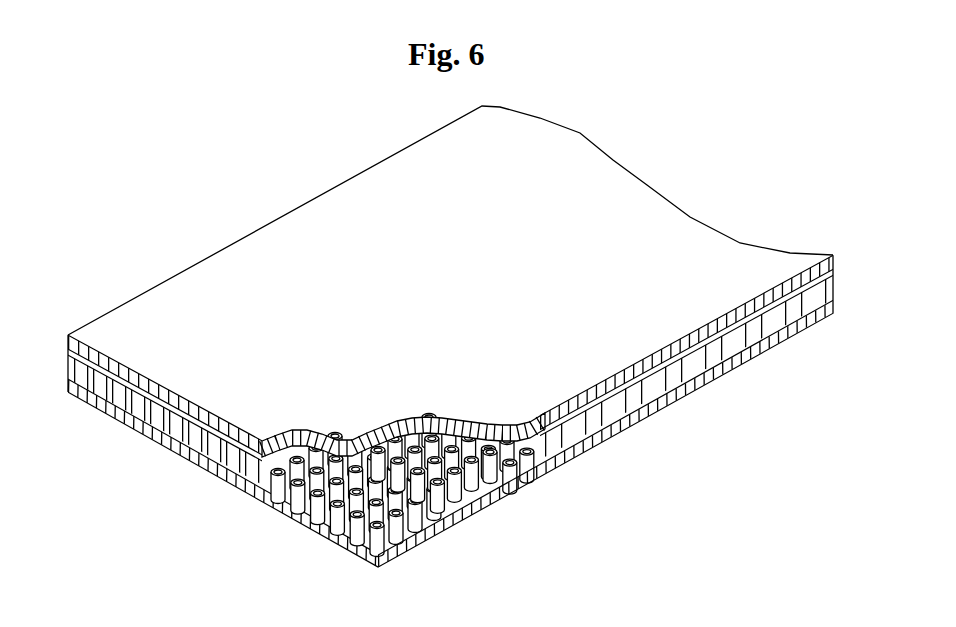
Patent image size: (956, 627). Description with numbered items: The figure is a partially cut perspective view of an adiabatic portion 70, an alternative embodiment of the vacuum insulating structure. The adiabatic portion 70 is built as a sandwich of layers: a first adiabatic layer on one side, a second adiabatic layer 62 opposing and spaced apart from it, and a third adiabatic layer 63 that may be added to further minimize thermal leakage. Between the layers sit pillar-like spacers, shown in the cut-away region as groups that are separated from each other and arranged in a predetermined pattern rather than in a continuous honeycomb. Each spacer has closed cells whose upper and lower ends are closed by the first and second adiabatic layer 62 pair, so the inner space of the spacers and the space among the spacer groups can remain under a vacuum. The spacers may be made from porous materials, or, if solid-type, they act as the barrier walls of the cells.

The adiabatic portion 70 is at (218, 186).
The second adiabatic layer 62 is at (578, 436).
The third adiabatic layer 63 is at (638, 420).